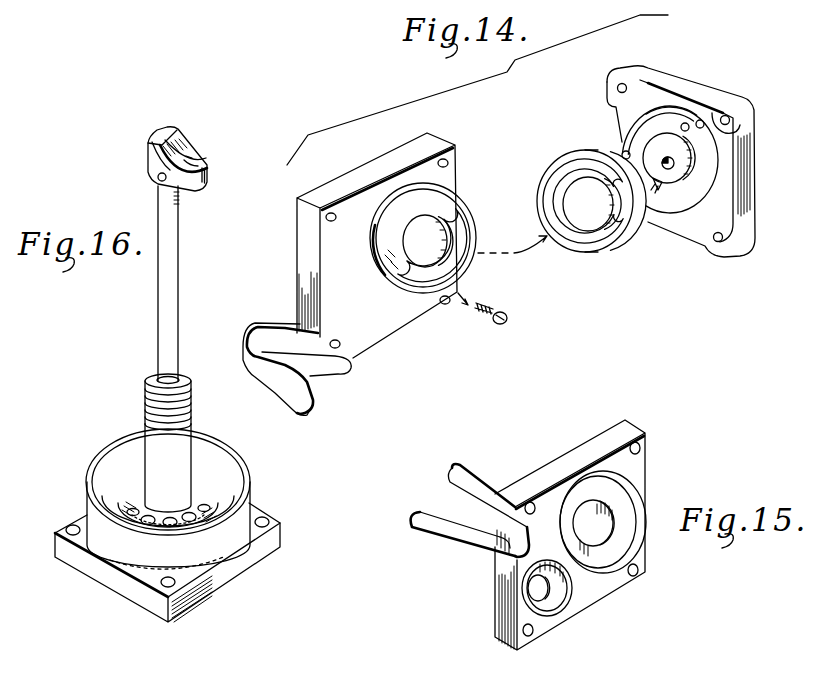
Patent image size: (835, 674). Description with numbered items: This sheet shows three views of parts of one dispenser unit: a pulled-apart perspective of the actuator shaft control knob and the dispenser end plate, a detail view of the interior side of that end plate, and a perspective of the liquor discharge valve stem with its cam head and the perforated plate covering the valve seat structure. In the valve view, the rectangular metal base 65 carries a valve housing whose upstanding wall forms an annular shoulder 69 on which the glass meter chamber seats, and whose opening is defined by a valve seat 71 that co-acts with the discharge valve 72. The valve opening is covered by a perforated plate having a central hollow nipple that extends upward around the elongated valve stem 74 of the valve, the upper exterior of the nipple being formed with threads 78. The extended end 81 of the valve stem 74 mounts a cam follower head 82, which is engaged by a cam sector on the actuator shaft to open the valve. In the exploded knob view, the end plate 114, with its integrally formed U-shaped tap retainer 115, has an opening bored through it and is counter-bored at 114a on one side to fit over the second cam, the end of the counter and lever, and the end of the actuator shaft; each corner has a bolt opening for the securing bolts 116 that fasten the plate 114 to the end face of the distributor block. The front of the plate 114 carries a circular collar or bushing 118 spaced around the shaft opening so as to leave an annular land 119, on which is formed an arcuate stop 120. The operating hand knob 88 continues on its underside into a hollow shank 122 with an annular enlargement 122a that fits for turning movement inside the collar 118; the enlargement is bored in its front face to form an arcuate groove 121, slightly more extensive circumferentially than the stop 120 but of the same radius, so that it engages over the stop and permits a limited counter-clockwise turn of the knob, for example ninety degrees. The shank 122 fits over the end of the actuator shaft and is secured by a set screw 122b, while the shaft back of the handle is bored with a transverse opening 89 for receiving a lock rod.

In FIG. 16, the base 65 is at (261, 553).
In FIG. 16, the annular shoulder 69 is at (226, 497).
In FIG. 16, the valve seat 71 is at (218, 598).
In FIG. 16, the discharge valve 72 is at (125, 505).
In FIG. 16, the valve stem 74 is at (175, 283).
In FIG. 16, the threads 78 is at (192, 405).
In FIG. 16, the extended end 81 is at (185, 128).
In FIG. 16, the cam follower head 82 is at (198, 162).
In FIG. 14, the hand knob 88 is at (700, 231).
In FIG. 14, the transverse opening 89 is at (669, 158).
In FIG. 14, the end plate 114 is at (338, 182).
In FIG. 15, the end plate 114 is at (563, 457).
In FIG. 15, the counter-bore 114a is at (698, 492).
In FIG. 14, the U-shaped tap retainer 115 is at (327, 367).
In FIG. 15, the U-shaped tap retainer 115 is at (462, 488).
In FIG. 14, the securing bolts 116 is at (490, 308).
In FIG. 14, the collar 118 is at (470, 201).
In FIG. 14, the annular land 119 is at (437, 200).
In FIG. 14, the arcuate stop 120 is at (422, 283).
In FIG. 14, the arcuate groove 121 is at (607, 243).
In FIG. 14, the hollow shank 122 is at (660, 186).
In FIG. 14, the annular enlargement 122a is at (583, 156).
In FIG. 14, the set screw 122b is at (627, 140).